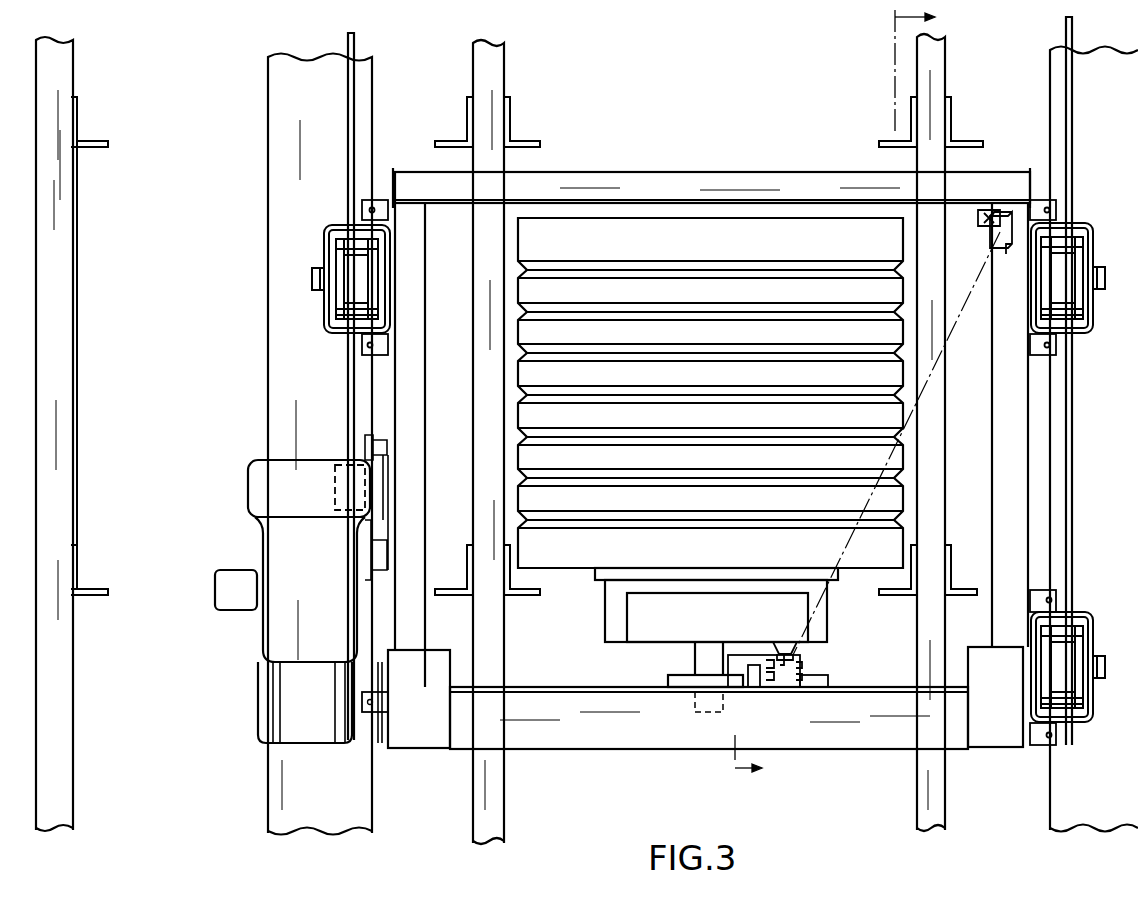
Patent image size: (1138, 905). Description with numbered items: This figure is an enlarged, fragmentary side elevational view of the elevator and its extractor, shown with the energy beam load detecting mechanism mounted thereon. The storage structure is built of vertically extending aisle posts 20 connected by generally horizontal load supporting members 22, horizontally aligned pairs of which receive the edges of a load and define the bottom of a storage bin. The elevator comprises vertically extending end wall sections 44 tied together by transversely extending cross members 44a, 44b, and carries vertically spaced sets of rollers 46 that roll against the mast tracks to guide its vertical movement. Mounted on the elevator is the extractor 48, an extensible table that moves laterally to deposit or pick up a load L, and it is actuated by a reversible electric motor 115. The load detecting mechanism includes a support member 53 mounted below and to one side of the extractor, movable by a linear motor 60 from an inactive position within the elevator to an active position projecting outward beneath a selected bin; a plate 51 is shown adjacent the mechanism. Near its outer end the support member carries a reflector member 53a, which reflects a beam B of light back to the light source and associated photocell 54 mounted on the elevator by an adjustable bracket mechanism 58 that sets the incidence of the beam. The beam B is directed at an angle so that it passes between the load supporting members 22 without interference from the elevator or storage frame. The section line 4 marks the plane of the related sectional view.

The aisle post 20 is at (65, 355).
The load supporting member 22 is at (78, 142).
The end wall section 44 is at (393, 393).
The cross member 44a is at (725, 178).
The cross member 44b is at (902, 737).
The roller 46 is at (341, 238).
The extractor 48 is at (612, 632).
The plate 51 is at (830, 675).
The support member 53 is at (788, 667).
The reflector member 53a is at (778, 652).
The light source and associated photocell 54 is at (978, 217).
The adjustable bracket mechanism 58 is at (1017, 254).
The linear motor 60 is at (770, 688).
The reversible electric motor 115 is at (275, 548).
The load L is at (603, 230).
The beam of light B is at (940, 378).
The section line 4- 4 is at (841, 394).